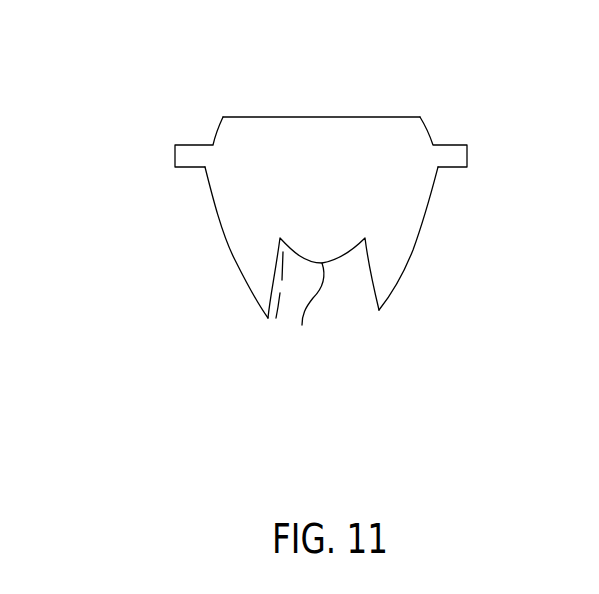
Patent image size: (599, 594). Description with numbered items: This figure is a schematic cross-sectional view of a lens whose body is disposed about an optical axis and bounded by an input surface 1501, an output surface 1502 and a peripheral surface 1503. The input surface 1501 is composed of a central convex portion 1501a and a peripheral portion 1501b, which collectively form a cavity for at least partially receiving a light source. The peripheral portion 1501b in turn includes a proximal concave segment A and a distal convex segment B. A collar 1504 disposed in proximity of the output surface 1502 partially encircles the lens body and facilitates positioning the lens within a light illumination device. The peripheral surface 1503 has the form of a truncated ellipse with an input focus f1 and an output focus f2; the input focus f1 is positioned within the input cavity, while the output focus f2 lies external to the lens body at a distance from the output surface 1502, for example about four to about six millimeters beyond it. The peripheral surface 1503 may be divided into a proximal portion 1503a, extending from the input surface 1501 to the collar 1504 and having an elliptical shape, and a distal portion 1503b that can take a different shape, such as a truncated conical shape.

The input surface 1501 is at (365, 383).
The central convex portion 1501a is at (302, 325).
The peripheral portion 1501b is at (373, 302).
The output surface 1502 is at (332, 117).
The peripheral surface 1503 is at (223, 240).
The proximal portion of the peripheral surface 1503a is at (127, 168).
The distal portion of the peripheral surface 1503b is at (174, 145).
The collar 1504 is at (450, 143).
The input focus f1 is at (331, 289).
The output focus f2 is at (324, 90).
The proximal concave segment A is at (289, 309).
The distal convex segment B is at (296, 270).